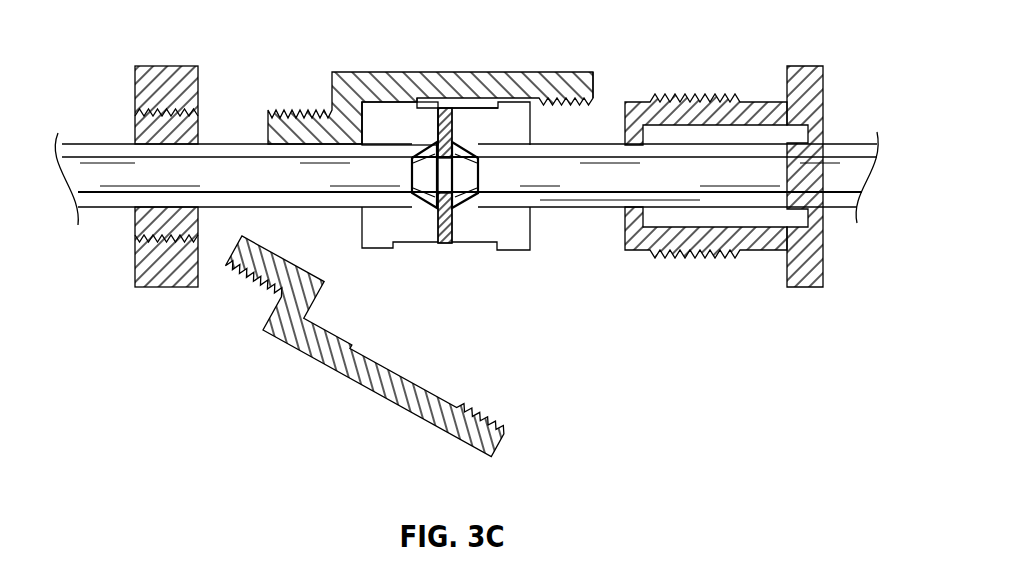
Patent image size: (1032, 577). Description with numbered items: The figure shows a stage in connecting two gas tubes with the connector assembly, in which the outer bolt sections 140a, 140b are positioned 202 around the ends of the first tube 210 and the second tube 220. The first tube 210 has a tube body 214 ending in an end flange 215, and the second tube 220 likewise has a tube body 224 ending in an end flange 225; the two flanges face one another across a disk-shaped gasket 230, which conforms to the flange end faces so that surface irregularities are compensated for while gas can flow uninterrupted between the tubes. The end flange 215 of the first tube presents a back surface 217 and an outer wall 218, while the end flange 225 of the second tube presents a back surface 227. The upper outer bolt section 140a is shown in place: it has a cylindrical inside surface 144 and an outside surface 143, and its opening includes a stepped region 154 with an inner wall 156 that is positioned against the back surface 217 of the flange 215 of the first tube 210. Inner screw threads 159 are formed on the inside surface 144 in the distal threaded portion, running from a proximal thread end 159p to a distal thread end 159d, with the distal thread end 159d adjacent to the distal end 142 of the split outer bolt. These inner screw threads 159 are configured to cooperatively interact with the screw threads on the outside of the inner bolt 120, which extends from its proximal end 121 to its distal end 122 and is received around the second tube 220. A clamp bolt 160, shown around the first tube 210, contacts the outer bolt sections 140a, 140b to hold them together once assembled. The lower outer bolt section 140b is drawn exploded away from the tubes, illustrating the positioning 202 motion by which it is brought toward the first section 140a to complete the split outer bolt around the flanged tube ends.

The first tube 210 is at (248, 152).
The tube body 214 is at (97, 152).
The clamp bolt 160 is at (150, 288).
The outer bolt section 140a is at (357, 85).
The outer wall 218 is at (387, 120).
The inside surface 144 is at (452, 95).
The proximal thread end 159p is at (551, 104).
The inner screw threads 159 is at (571, 104).
The distal end 142 is at (599, 88).
The proximal end 121 is at (623, 112).
The inner bolt 120 is at (800, 85).
The distal end 122 is at (828, 96).
The second tube 220 is at (597, 208).
The tube body 224 is at (828, 200).
The end flange 215 is at (398, 220).
The back surface 217 is at (358, 214).
The gasket 230 is at (440, 228).
The end flange 225 is at (509, 238).
The back surface 227 is at (536, 233).
The outer bolt section 140b is at (415, 407).
The outside surface 143 is at (329, 369).
The inner wall 156 is at (319, 303).
The stepped region 154 is at (329, 318).
The positioning 202 is at (430, 387).
The distal thread end 159d is at (510, 440).